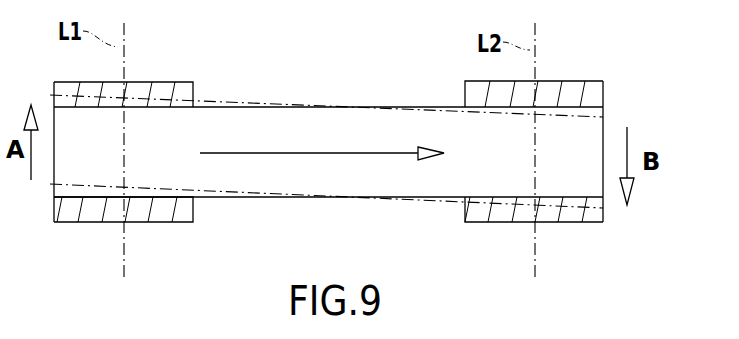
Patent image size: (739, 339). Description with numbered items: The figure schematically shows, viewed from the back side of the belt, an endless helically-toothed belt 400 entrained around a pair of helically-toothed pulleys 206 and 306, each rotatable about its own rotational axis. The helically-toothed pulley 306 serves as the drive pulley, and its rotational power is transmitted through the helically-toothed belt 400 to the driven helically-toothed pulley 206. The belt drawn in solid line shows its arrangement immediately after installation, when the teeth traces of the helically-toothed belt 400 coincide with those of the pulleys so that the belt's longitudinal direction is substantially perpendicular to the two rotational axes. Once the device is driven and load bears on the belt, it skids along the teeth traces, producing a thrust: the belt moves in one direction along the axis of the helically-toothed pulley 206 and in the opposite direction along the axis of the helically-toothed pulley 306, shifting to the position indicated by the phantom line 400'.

The helically-toothed pulley 206 is at (145, 81).
The helically-toothed pulley 306 is at (570, 81).
The helically-toothed belt 400 is at (326, 226).
The phantom-line belt position 400' is at (326, 83).